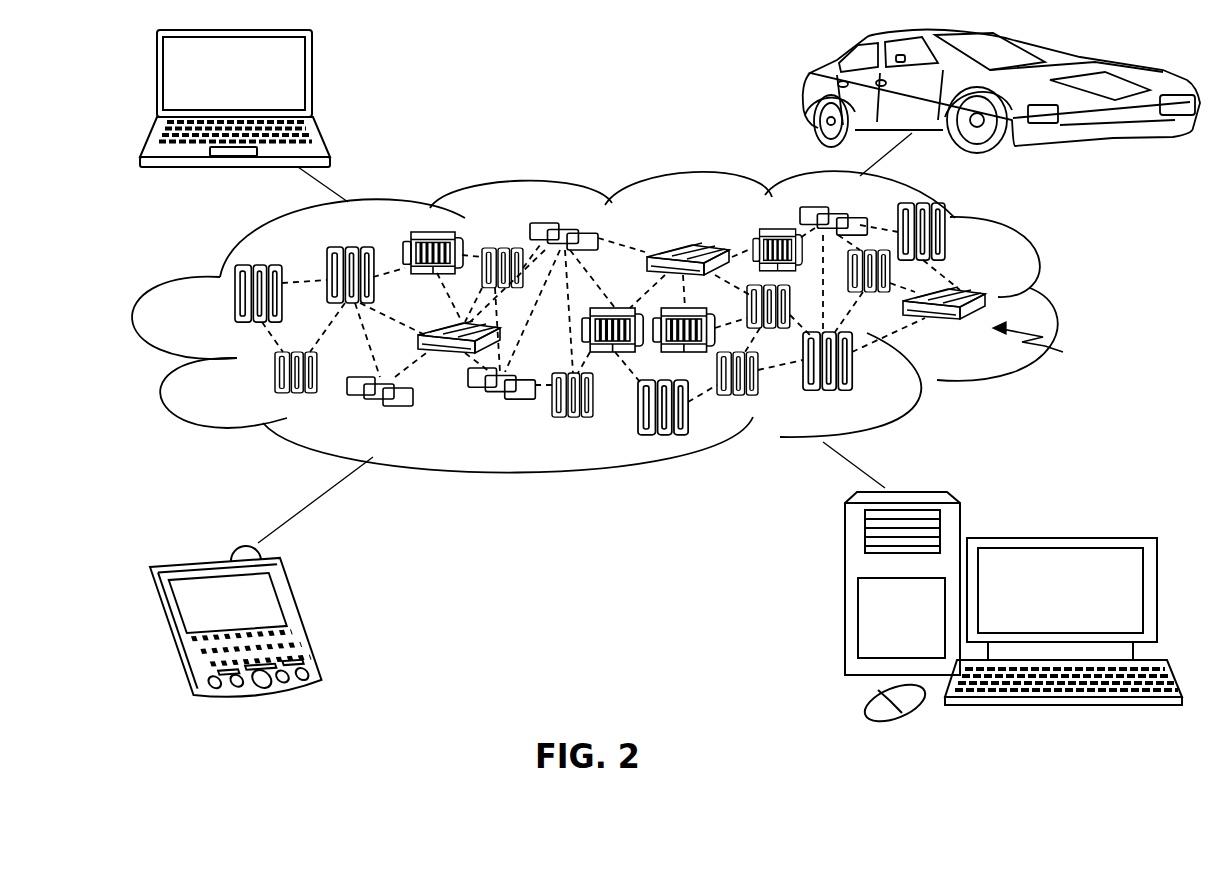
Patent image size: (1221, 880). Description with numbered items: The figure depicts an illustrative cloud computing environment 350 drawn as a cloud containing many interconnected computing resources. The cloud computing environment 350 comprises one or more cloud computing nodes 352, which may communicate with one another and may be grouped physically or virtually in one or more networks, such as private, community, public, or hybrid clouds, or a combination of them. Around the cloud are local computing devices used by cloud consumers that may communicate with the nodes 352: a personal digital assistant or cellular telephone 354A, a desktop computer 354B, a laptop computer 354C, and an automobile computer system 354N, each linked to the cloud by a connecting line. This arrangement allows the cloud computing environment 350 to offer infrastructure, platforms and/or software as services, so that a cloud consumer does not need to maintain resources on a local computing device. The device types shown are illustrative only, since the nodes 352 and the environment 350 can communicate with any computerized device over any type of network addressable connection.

The cloud computing environment 350 is at (1058, 301).
The cloud computing node 352 is at (432, 243).
The personal digital assistant (PDA) or cellular telephone 354A is at (302, 613).
The desktop computer 354B is at (1057, 538).
The laptop computer 354C is at (312, 84).
The automobile computer system 354N is at (806, 92).